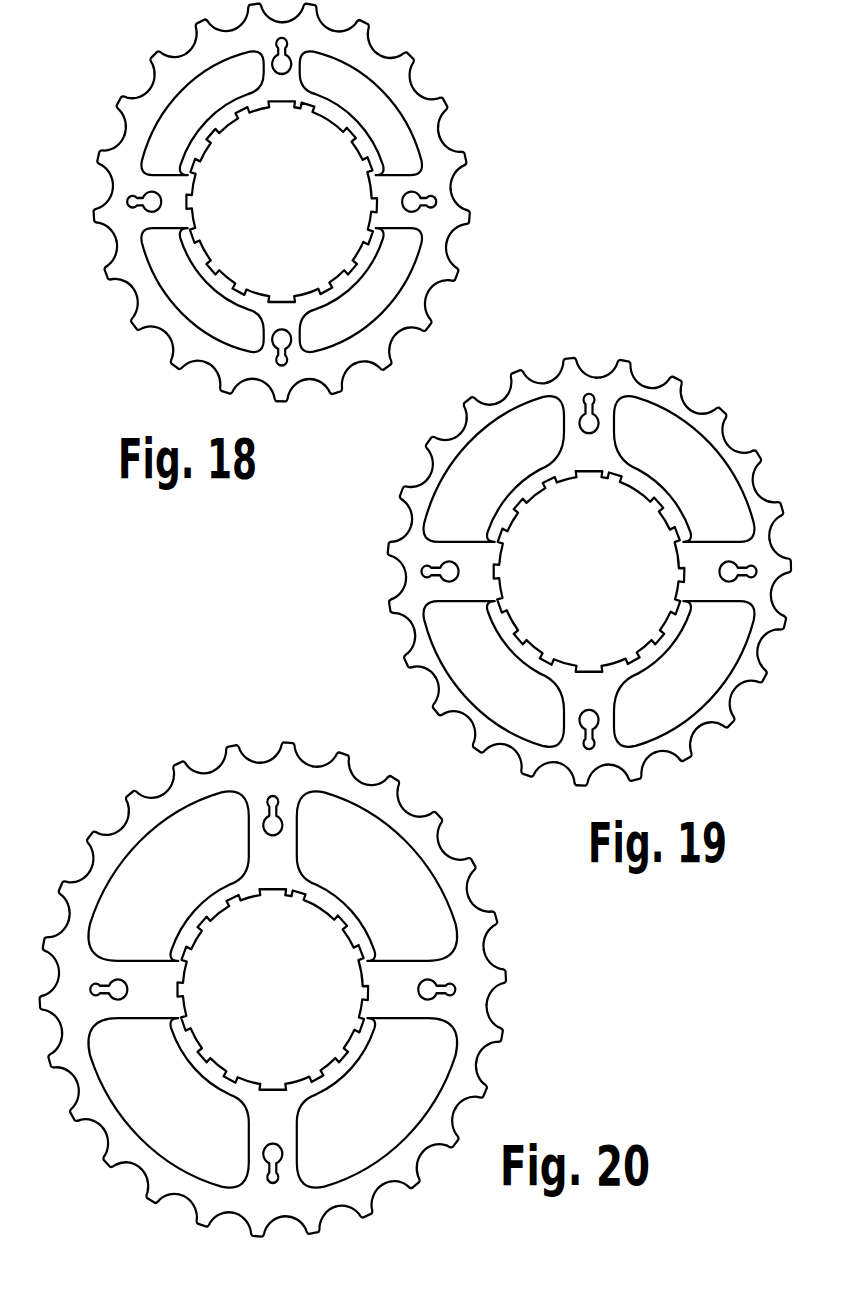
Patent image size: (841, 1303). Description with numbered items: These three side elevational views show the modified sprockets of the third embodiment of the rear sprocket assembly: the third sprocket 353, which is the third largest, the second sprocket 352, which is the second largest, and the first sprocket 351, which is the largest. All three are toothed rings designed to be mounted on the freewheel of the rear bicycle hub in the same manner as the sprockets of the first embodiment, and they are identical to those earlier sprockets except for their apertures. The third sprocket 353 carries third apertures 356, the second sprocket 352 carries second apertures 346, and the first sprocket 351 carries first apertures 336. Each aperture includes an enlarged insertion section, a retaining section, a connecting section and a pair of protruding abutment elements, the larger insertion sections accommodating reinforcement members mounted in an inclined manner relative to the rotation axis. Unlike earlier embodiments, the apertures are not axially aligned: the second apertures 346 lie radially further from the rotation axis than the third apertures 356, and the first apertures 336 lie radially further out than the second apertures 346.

In FIG. 18, the third sprocket 353 is at (305, 201).
In FIG. 19, the second sprocket 352 is at (582, 504).
In FIG. 20, the first sprocket 351 is at (335, 933).
In FIG. 18, the third apertures 356 is at (269, 63).
In FIG. 19, the second apertures 346 is at (575, 432).
In FIG. 20, the first apertures 336 is at (262, 830).